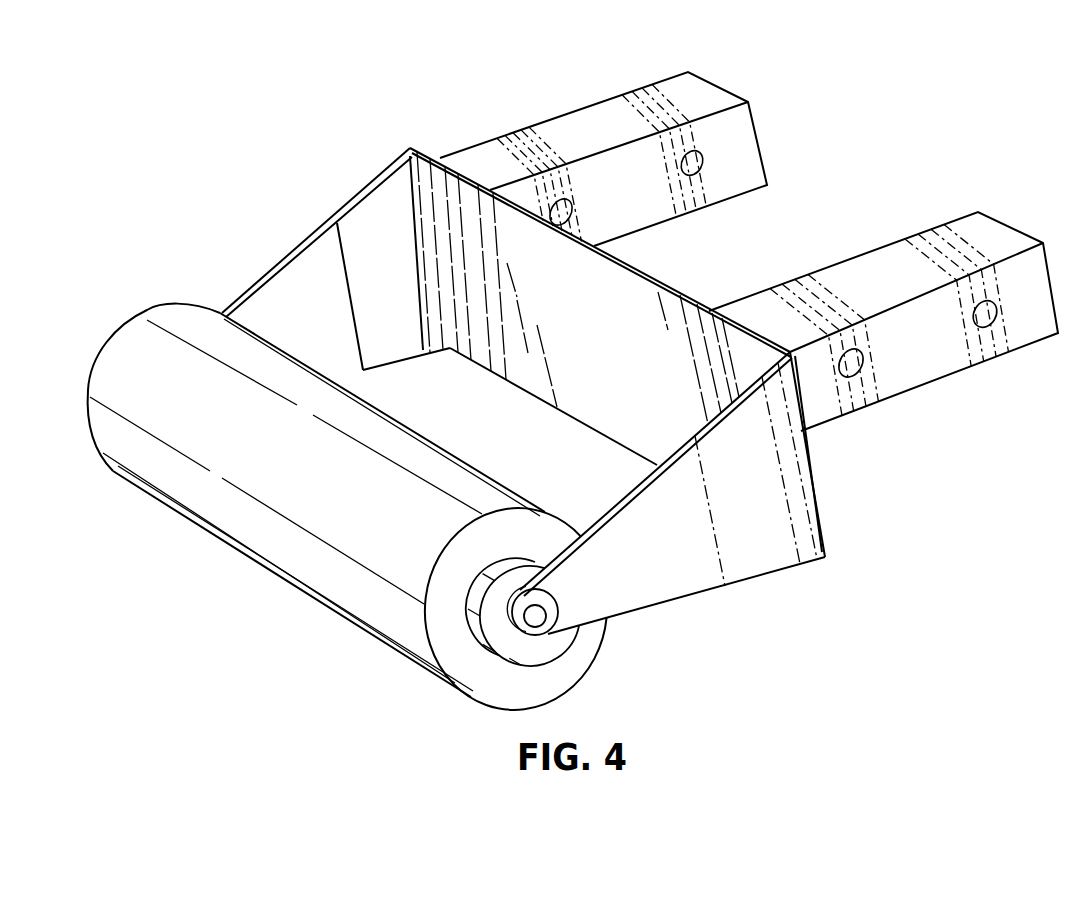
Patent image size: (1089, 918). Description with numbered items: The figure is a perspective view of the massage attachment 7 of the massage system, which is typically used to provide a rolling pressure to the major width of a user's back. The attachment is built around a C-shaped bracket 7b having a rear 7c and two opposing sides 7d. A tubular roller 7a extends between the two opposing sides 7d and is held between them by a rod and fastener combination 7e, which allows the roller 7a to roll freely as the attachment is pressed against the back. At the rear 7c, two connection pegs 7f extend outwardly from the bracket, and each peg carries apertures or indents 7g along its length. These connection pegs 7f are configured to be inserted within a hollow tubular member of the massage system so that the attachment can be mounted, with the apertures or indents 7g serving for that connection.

The massage attachment 7 is at (198, 597).
The tubular roller 7a is at (131, 318).
The C-shaped bracket 7b is at (817, 463).
The rear 7c is at (678, 292).
The opposing sides 7d is at (310, 238).
The rod and fastener combination 7e is at (546, 617).
The connection pegs 7f is at (585, 103).
The apertures or indents 7g is at (997, 318).